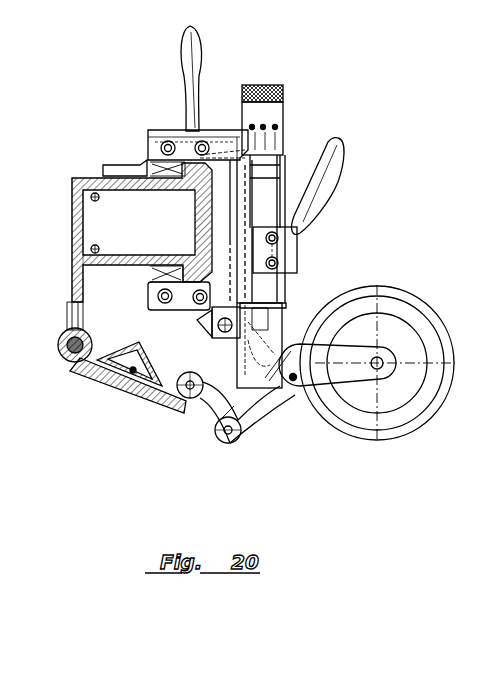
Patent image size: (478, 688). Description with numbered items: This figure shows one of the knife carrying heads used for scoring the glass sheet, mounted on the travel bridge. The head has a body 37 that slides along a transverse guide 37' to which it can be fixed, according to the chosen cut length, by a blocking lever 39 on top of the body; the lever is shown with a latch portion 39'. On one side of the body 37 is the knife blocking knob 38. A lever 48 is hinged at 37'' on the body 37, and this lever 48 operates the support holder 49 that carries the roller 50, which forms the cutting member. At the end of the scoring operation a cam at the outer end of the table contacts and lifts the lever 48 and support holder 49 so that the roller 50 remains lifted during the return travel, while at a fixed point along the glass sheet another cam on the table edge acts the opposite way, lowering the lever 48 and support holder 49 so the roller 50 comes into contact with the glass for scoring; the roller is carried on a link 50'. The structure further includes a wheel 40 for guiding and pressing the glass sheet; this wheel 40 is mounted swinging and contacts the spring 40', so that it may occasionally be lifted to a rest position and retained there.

The body 37 is at (124, 241).
The transverse guide 37' is at (57, 240).
The hinge 37'' is at (52, 359).
The knife blocking knob 38 is at (343, 153).
The blocking lever 39 is at (214, 78).
The latch of handle 39' is at (171, 151).
The wheel 40 is at (367, 379).
The spring 40' is at (265, 332).
The lever 48 is at (108, 378).
The support holder 49 is at (213, 405).
The roller 50 is at (246, 446).
The link 50' is at (245, 434).